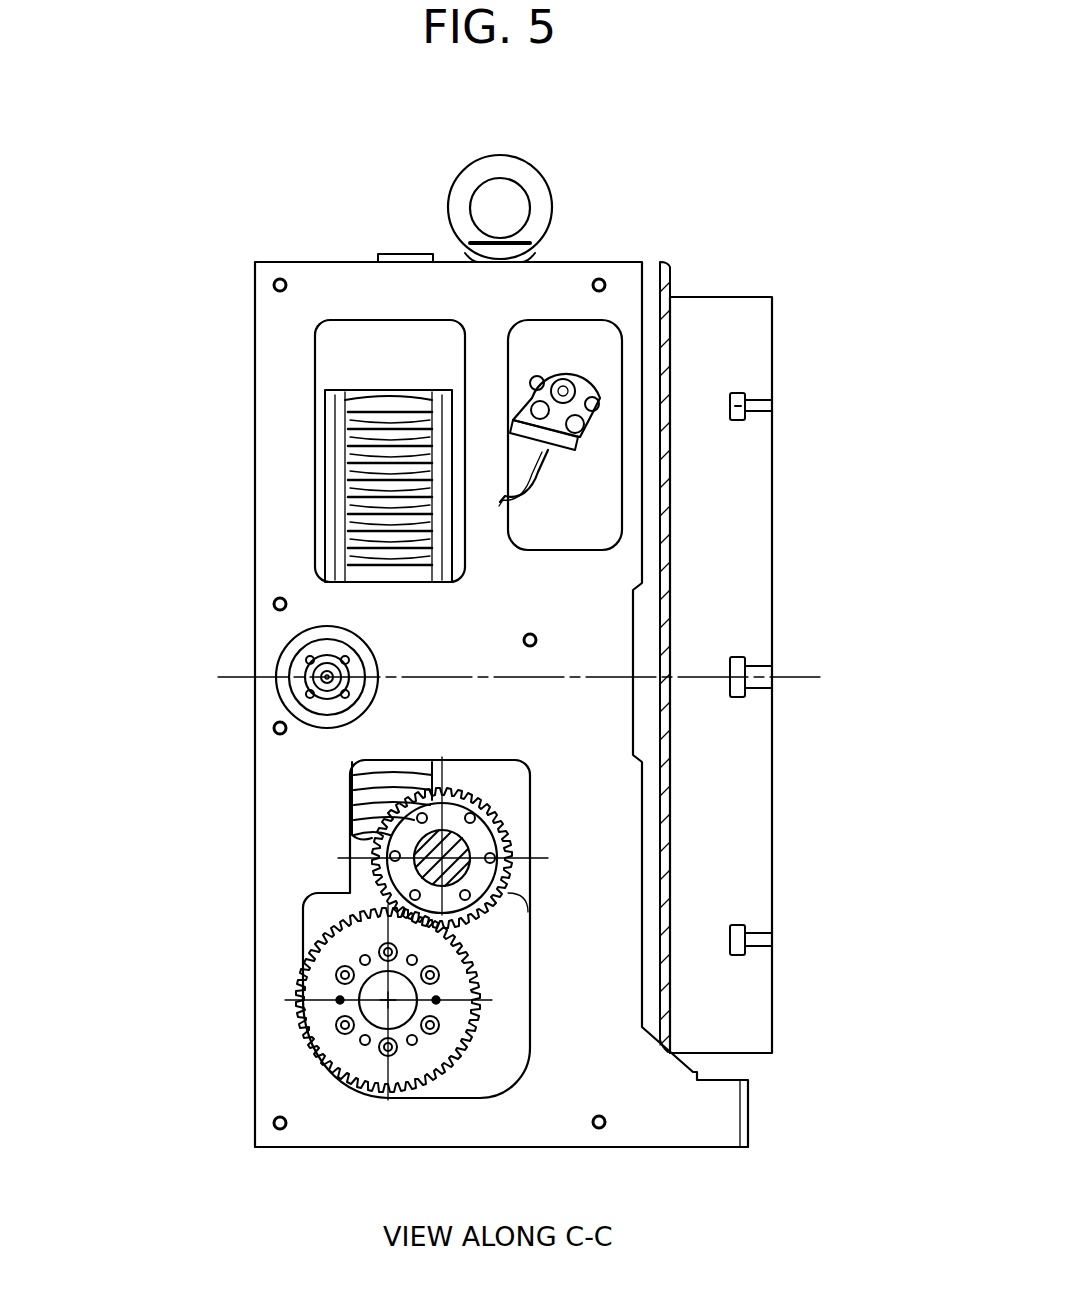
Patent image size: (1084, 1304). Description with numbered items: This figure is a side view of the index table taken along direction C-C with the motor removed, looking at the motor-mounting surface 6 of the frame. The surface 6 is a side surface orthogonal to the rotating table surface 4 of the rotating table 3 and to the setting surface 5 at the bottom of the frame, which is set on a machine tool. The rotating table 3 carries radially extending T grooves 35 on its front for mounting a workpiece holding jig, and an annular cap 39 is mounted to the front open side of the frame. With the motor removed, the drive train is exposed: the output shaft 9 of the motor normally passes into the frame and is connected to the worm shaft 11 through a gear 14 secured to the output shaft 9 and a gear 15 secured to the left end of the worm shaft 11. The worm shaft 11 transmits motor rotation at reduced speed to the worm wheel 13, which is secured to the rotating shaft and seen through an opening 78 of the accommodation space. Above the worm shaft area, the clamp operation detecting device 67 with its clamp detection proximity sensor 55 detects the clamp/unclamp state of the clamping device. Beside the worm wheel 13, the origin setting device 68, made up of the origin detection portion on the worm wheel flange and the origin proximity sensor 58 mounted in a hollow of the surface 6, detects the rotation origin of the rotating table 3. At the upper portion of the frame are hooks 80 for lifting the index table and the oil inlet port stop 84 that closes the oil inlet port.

The rotating table 3 is at (748, 845).
The rotating table surface 4 is at (770, 510).
The setting surface 5 is at (295, 1147).
The surface 6 is at (275, 868).
The output shaft 9 is at (470, 848).
The worm shaft 11 is at (355, 1003).
The worm wheel 13 is at (345, 513).
The gear 14 is at (508, 873).
The gear 15 is at (300, 975).
The T grooves 35 is at (770, 405).
The annular cap 39 is at (668, 763).
The clamp detection proximity sensor 55 is at (548, 448).
The origin proximity sensor 58 is at (305, 680).
The clamp operation detecting device 67 is at (540, 352).
The origin setting device 68 is at (277, 648).
The opening 78 is at (322, 348).
The hooks 80 is at (458, 180).
The oil inlet port stop 84 is at (400, 254).